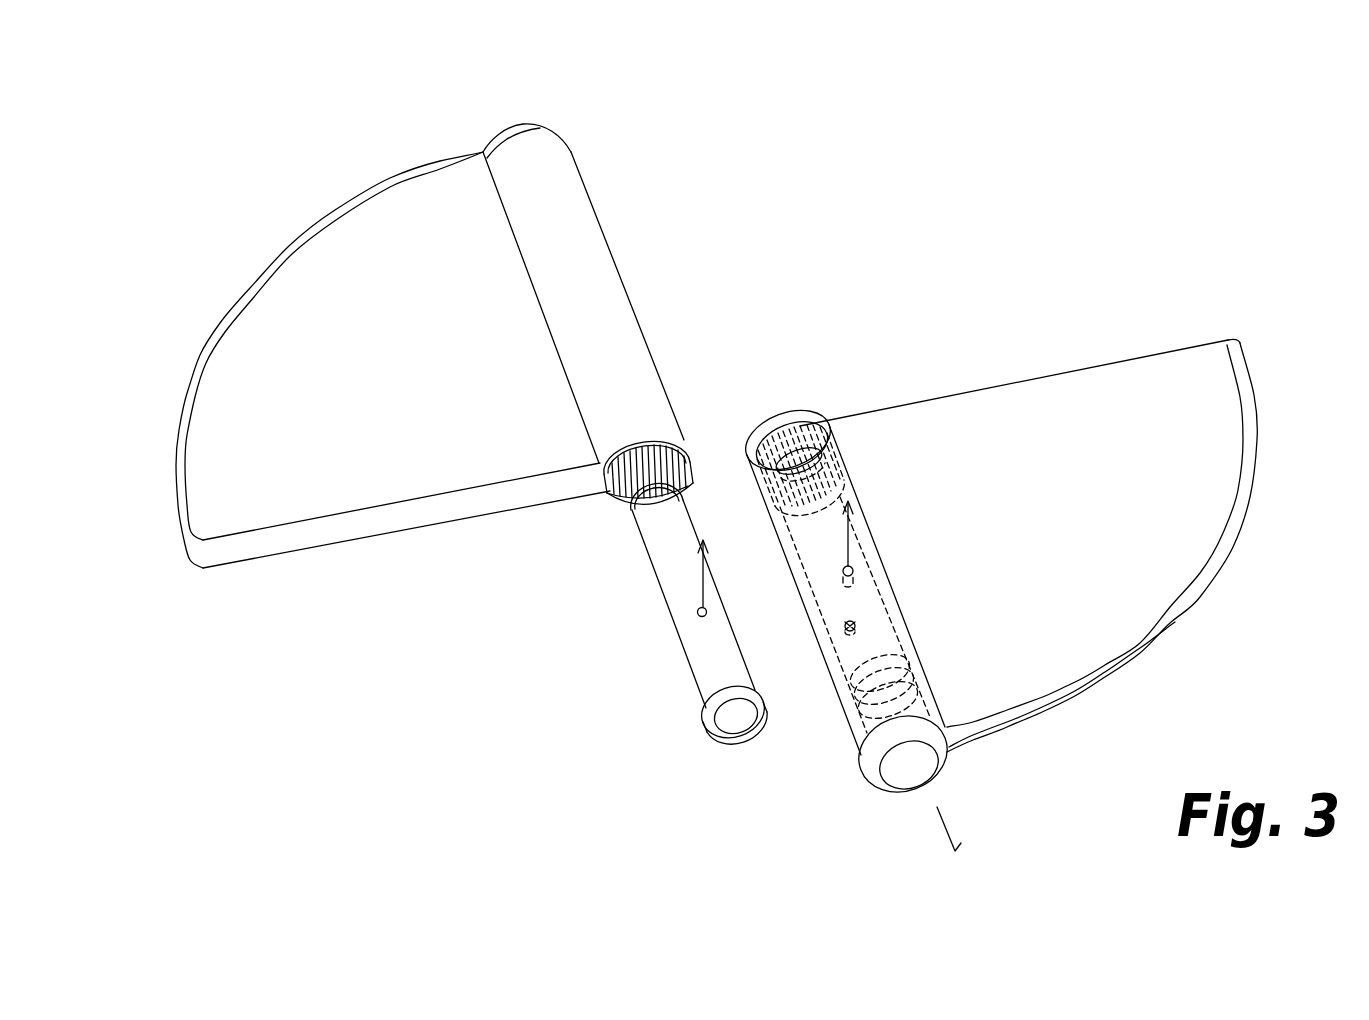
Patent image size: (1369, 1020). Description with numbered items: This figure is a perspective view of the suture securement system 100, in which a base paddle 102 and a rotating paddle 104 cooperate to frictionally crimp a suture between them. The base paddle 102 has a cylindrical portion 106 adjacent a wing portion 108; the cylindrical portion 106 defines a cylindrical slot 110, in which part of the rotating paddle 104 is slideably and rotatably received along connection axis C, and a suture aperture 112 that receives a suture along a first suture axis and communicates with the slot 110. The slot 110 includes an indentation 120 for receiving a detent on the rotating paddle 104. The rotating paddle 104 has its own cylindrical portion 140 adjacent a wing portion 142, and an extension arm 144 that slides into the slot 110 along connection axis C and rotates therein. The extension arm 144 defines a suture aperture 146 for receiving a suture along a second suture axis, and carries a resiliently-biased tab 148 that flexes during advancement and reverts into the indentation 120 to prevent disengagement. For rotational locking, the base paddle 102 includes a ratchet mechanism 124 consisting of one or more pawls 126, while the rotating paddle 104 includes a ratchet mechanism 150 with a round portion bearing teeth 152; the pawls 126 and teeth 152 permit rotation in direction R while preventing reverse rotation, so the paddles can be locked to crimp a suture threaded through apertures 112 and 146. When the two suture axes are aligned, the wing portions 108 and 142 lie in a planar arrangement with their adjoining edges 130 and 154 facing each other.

The suture securement system 100 is at (1106, 142).
The base paddle 102 is at (1222, 565).
The rotating paddle 104 is at (275, 265).
The cylindrical portion 106 is at (810, 633).
The wing portion 108 is at (1118, 679).
The cylindrical slot 110 is at (840, 487).
The suture aperture 112 is at (851, 567).
The indentation 120 is at (847, 708).
The ratchet mechanism 124 is at (833, 445).
The pawls 126 is at (800, 420).
The adjoining edge 130 is at (1147, 354).
The cylindrical portion 140 is at (624, 290).
The wing portion 142 is at (390, 186).
The extension arm 144 is at (660, 585).
The suture aperture 146 is at (700, 617).
The resiliently-biased tab 148 is at (705, 720).
The ratchet mechanism 150 is at (630, 508).
The teeth 152 is at (655, 447).
The adjoining edge 154 is at (333, 528).